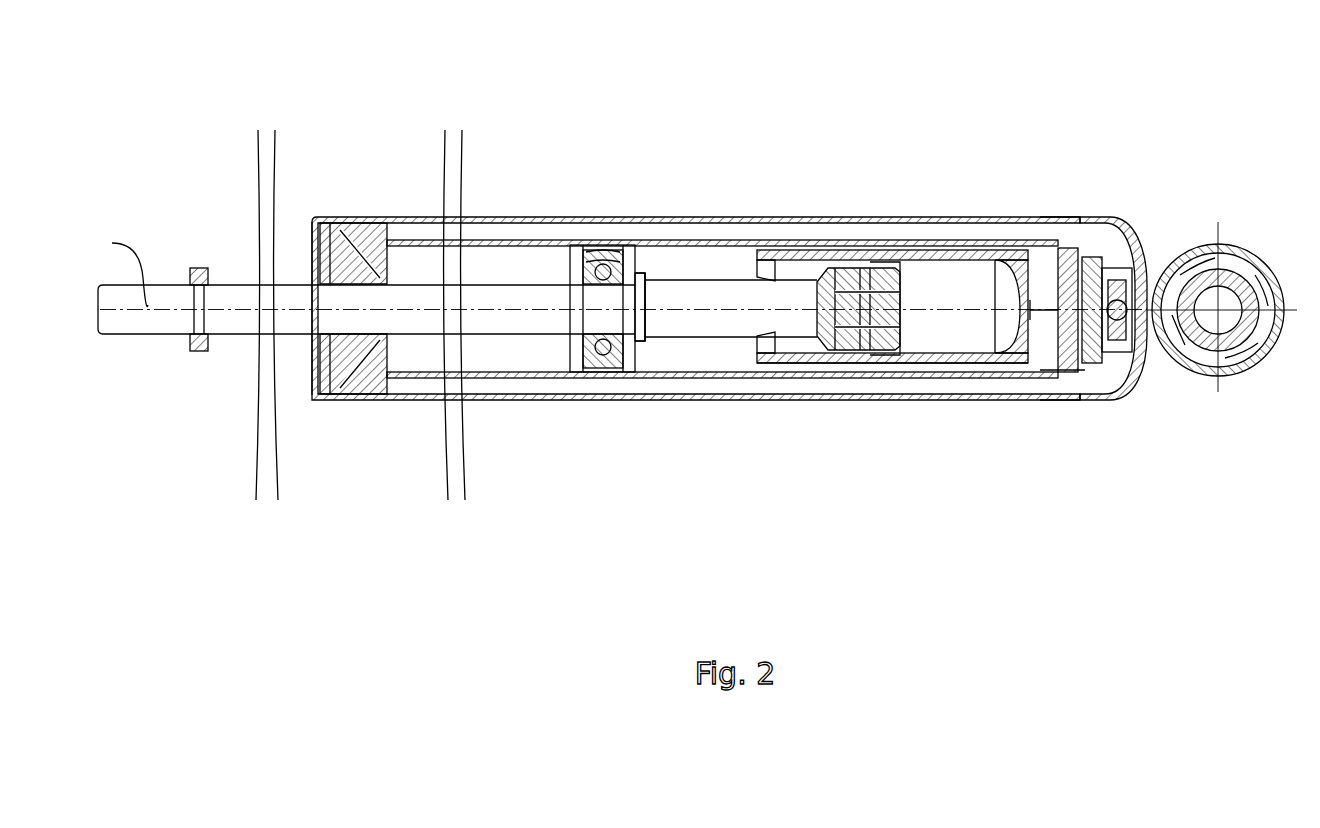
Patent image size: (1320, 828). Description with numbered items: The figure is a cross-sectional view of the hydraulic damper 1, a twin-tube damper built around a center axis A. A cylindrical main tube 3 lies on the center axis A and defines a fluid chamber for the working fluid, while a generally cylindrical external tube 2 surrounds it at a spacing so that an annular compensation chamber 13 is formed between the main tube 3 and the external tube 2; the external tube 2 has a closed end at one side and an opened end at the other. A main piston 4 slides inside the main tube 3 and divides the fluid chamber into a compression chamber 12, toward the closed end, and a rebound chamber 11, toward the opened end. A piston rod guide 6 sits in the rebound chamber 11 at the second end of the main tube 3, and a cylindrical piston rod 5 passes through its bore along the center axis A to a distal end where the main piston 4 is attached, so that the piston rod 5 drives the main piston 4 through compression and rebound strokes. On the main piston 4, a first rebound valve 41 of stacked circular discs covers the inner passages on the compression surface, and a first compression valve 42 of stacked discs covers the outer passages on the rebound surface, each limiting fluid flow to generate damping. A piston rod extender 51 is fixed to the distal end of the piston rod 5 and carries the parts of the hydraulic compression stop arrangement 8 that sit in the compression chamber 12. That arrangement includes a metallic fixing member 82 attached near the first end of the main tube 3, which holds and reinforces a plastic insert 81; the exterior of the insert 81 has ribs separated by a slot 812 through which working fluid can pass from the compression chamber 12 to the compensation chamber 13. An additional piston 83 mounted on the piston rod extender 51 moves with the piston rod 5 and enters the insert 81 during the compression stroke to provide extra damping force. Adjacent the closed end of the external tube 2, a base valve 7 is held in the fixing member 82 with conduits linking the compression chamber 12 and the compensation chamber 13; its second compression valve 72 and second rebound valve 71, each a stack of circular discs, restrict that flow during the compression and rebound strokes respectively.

The hydraulic damper 1 is at (491, 405).
The external tube 2 is at (677, 398).
The main tube 3 is at (637, 372).
The main piston 4 is at (583, 243).
The first rebound valve 41 is at (623, 245).
The first compression valve 42 is at (585, 372).
The piston rod 5 is at (240, 323).
The piston rod extender 51 is at (723, 293).
The piston rod guide 6 is at (357, 387).
The base valve 7 is at (1104, 375).
The second rebound valve 71 is at (1088, 248).
The second compression valve 72 is at (1116, 226).
The hydraulic compression stop arrangement 8 is at (923, 364).
The insert 81 is at (850, 347).
The slot 812 is at (930, 253).
The fixing member 82 is at (1060, 383).
The additional piston 83 is at (872, 262).
The rebound chamber 11 is at (418, 362).
The compression chamber 12 is at (692, 279).
The compensation chamber 13 is at (988, 226).
The center axis A is at (120, 267).